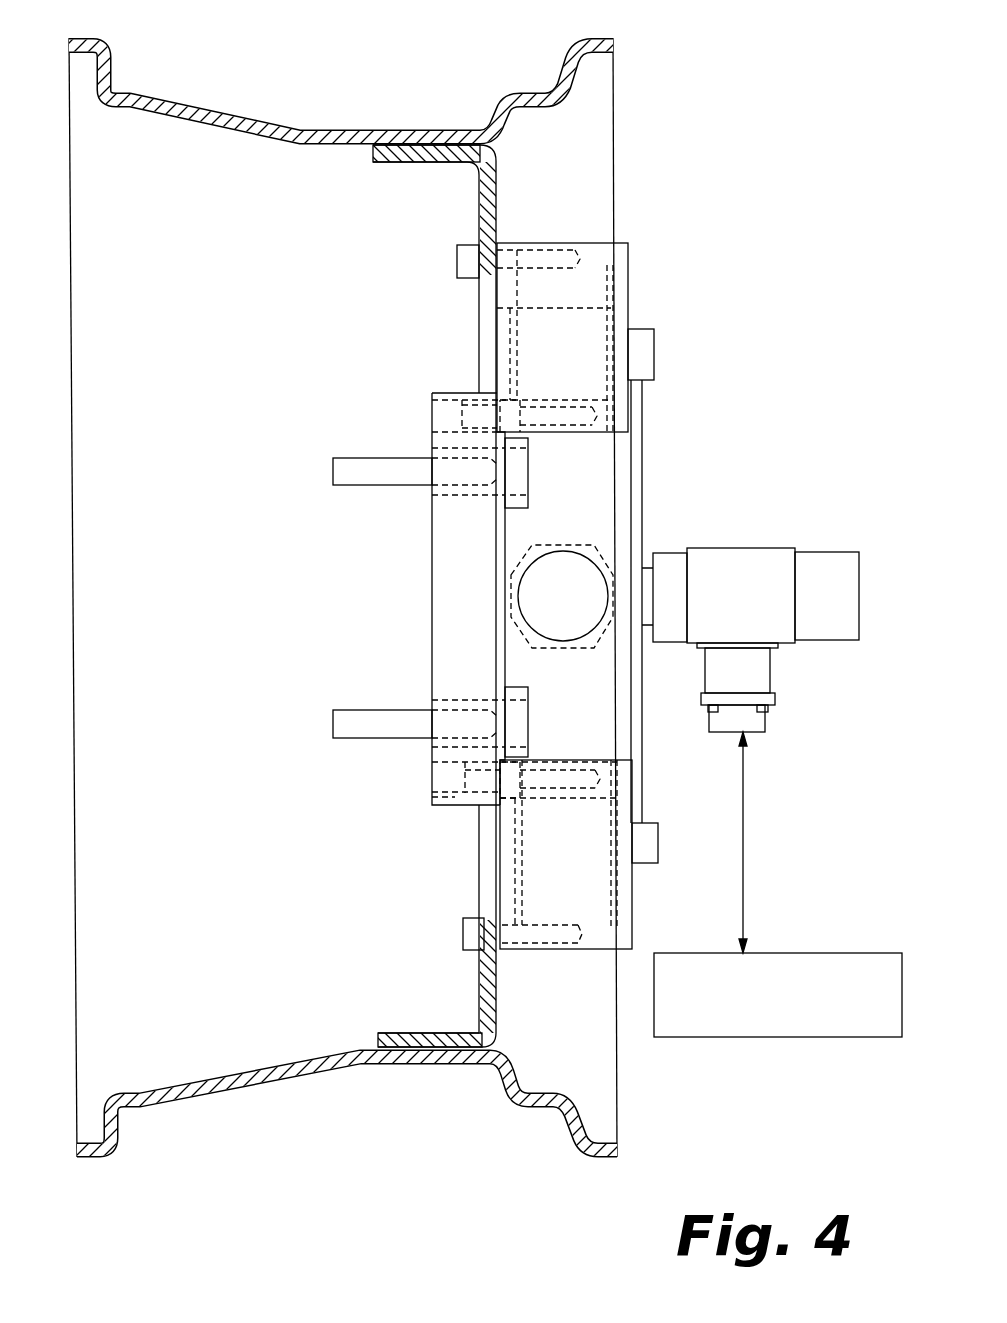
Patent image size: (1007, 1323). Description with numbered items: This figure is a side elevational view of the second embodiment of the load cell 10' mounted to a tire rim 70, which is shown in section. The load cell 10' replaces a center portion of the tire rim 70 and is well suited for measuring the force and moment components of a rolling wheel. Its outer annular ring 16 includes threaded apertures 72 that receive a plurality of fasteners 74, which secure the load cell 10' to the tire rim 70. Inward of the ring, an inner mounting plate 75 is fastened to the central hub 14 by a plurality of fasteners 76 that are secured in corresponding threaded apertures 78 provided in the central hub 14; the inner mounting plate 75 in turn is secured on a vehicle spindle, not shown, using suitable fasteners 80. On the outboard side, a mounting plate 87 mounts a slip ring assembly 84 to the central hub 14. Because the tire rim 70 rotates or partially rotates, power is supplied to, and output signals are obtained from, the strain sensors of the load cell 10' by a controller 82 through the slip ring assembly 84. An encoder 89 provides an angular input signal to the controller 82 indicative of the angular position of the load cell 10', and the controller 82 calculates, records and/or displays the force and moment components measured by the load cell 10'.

The tire rim 70 is at (593, 38).
The fasteners 74 is at (468, 245).
The threaded apertures 72 is at (520, 238).
The annular ring 16 is at (633, 262).
The load cell 10' is at (714, 257).
The mounting plate 87 is at (645, 498).
The inner mounting plate 75 is at (432, 585).
The fasteners 76 is at (448, 392).
The threaded apertures 78 is at (553, 398).
The fasteners 80 is at (375, 457).
The central hub 14 is at (573, 435).
The slip ring assembly 84 is at (703, 552).
The encoder 89 is at (808, 552).
The controller 82 is at (788, 952).